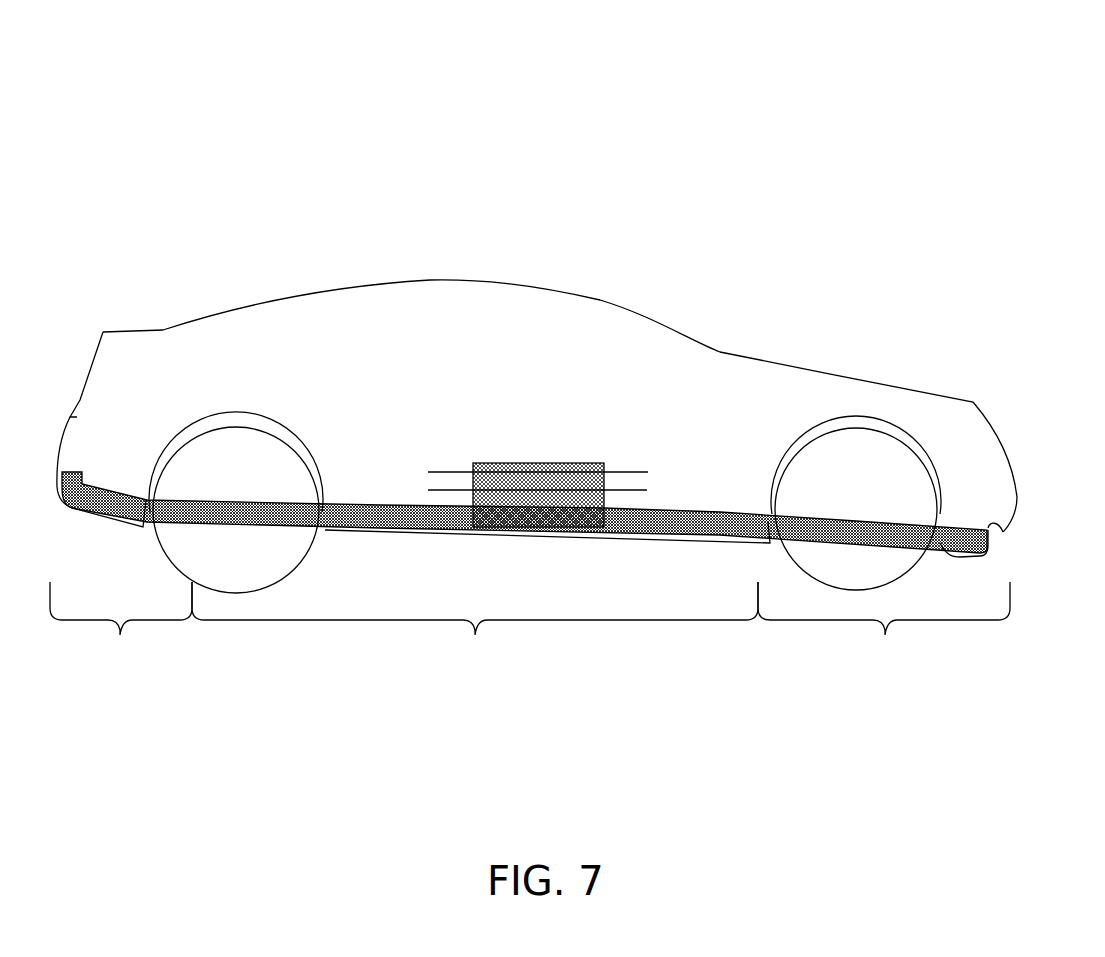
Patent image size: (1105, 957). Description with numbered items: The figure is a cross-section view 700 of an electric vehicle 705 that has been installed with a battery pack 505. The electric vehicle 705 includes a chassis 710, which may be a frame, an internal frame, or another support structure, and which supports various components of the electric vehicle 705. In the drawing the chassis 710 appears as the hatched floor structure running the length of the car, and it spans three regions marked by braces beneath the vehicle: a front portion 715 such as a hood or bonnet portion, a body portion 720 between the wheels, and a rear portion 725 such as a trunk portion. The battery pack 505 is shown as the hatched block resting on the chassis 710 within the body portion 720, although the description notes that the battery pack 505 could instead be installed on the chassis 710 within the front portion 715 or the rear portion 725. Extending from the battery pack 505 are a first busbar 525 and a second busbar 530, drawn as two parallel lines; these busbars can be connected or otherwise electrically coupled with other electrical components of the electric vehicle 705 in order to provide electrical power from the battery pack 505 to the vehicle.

The cross-section view 700 is at (575, 80).
The electric vehicle 705 is at (528, 272).
The chassis 710 is at (978, 538).
The front portion 715 is at (884, 626).
The body portion 720 is at (475, 629).
The rear portion 725 is at (121, 626).
The battery pack 505 is at (528, 455).
The first busbar 525 is at (638, 466).
The second busbar 530 is at (654, 486).